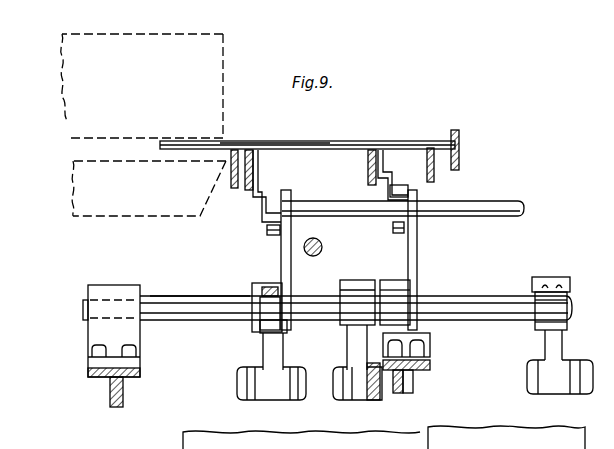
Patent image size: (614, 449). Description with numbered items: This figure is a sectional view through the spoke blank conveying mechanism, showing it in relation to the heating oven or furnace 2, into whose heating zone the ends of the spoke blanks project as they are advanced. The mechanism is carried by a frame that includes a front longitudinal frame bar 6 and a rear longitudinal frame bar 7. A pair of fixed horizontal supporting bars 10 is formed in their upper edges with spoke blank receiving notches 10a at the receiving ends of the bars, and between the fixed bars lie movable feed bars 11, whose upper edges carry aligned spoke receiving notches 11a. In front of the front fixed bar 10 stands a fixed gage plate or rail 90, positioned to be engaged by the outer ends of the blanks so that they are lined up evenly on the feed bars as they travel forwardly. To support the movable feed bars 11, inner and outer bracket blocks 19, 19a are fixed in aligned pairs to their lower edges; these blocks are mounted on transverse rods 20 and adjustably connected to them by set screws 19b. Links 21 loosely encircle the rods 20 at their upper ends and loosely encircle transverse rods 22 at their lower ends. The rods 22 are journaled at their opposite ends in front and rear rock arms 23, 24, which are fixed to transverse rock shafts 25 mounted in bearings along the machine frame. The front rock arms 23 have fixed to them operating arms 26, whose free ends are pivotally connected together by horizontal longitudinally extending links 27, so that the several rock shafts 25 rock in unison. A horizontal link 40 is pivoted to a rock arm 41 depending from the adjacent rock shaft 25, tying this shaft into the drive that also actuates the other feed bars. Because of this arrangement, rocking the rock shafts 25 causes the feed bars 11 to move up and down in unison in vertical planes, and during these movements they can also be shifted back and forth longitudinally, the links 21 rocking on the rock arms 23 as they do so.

The heating oven or furnace 2 is at (223, 44).
The movable feed bars 11 is at (307, 154).
The spoke receiving notches 11a is at (333, 147).
The spoke blank receiving notches 10a is at (226, 152).
The gage plate or rail 90 is at (460, 135).
The supporting bars 10 is at (247, 180).
The inner bracket blocks 19 is at (259, 203).
The transverse rods 20 is at (403, 219).
The outer bracket blocks 19a is at (386, 200).
The set screws 19b is at (275, 236).
The links 21 is at (293, 270).
The transverse rods 22 is at (498, 322).
The transverse rock shafts 25 is at (200, 286).
The rear longitudinal frame bar 7 is at (105, 372).
The rear rock arms 24 is at (255, 318).
The rock arm 41 is at (355, 345).
The horizontal link 40 is at (375, 403).
The front longitudinal frame bar 6 is at (430, 365).
The front rock arms 23 is at (543, 305).
The operating arms 26 is at (548, 348).
The links 27 is at (578, 394).